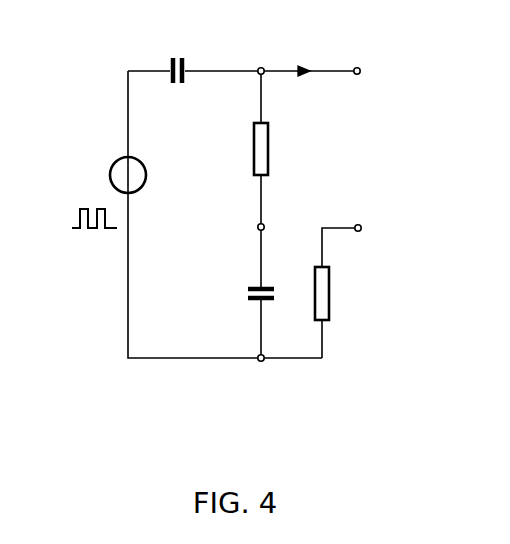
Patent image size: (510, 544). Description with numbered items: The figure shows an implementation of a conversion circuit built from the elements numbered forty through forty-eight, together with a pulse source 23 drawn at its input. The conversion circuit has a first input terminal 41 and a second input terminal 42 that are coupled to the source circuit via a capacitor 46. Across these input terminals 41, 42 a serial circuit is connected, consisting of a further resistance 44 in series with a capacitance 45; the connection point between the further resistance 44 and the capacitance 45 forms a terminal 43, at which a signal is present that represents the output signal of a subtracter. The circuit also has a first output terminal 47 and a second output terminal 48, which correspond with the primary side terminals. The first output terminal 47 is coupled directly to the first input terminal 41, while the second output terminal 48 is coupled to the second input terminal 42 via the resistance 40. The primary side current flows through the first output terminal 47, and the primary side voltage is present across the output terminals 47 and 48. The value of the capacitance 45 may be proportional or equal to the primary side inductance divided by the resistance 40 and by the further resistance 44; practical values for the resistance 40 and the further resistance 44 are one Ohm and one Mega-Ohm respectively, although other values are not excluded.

The pulse signal source 23 is at (109, 172).
The resistance 40 is at (330, 293).
The first input terminal 41 is at (261, 67).
The second input terminal 42 is at (261, 362).
The terminal 43 is at (257, 227).
The further resistance 44 is at (253, 147).
The capacitance 45 is at (247, 290).
The capacitor 46 is at (176, 56).
The first output terminal 47 is at (357, 67).
The second output terminal 48 is at (358, 224).